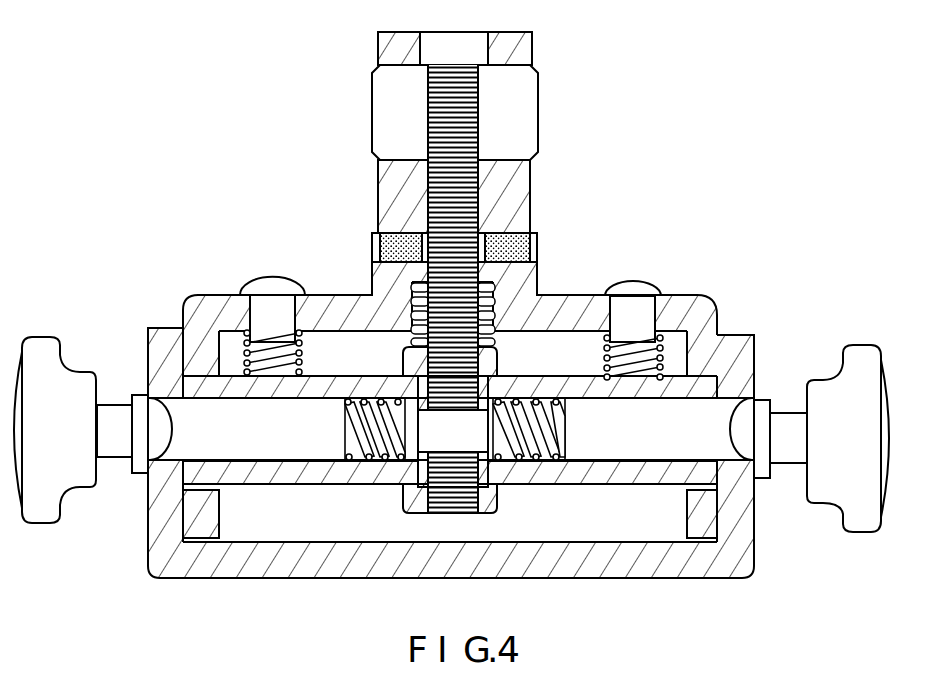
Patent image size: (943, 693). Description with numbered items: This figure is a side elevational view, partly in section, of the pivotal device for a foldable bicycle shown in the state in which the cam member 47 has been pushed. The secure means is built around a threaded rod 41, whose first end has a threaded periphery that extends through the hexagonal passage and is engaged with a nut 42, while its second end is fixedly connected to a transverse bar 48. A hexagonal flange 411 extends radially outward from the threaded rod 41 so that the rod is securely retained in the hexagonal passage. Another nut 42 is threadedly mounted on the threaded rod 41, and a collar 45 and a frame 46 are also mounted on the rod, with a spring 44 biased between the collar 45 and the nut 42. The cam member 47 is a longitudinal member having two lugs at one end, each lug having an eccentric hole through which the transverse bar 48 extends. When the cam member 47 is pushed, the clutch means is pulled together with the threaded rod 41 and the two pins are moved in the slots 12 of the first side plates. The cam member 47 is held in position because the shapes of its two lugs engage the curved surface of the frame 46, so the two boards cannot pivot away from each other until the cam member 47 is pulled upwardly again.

The slot 12 is at (690, 490).
The threaded rod 41 is at (432, 185).
The nut 42 is at (497, 366).
The spring 44 is at (423, 298).
The collar 45 is at (533, 292).
The frame 46 is at (500, 233).
The cam member 47 is at (522, 52).
The transverse bar 48 is at (522, 118).
The hexagonal flange 411 is at (442, 433).